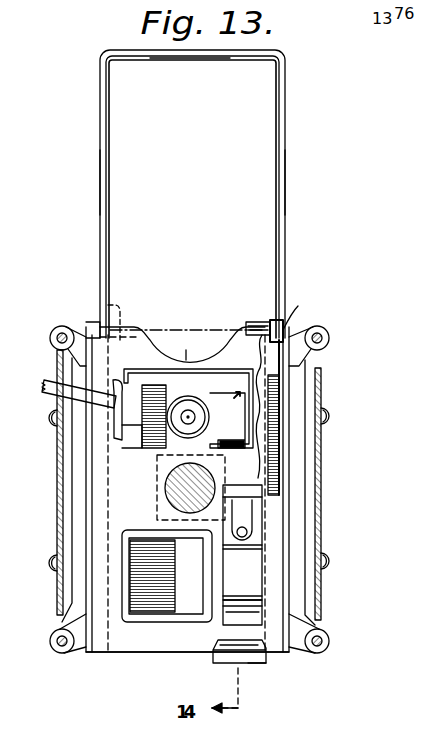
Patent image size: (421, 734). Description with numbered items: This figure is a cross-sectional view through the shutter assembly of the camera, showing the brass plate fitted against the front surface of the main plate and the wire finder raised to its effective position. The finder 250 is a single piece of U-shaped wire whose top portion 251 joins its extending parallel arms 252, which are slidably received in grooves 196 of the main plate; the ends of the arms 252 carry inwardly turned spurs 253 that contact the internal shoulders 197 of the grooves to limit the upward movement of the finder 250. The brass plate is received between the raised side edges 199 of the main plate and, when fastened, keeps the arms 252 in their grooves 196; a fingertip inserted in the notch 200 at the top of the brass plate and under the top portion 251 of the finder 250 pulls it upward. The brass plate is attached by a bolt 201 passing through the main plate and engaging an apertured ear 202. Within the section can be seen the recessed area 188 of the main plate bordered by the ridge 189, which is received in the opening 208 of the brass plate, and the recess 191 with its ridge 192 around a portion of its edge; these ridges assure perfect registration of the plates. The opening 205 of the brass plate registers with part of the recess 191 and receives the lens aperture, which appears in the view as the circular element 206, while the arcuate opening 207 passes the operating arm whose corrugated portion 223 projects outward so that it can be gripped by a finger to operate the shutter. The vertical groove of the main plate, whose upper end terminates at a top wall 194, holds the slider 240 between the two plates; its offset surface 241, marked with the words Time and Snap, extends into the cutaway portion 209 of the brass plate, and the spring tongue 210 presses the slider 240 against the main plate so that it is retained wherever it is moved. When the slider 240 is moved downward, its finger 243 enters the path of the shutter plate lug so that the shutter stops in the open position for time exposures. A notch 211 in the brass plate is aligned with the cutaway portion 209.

The finder 250 is at (298, 150).
The cover top wall 251 is at (188, 59).
The parallel arms 252 is at (100, 180).
The recessed area 188 is at (148, 612).
The ridge 189 is at (182, 620).
The notch 200 is at (150, 345).
The recess 191 is at (190, 348).
The ridge 192 is at (205, 348).
The internal shoulders 197 is at (110, 308).
The spurs 253 is at (48, 349).
The raised side edges 199 is at (285, 404).
The grooves 196 is at (282, 471).
The portion 223 is at (50, 382).
The arcuate opening 207 is at (112, 425).
The opening 205 is at (142, 453).
The bolt 201 is at (198, 394).
The apertured ear 202 is at (166, 421).
The top wall 194 is at (229, 438).
The cam 206 is at (166, 501).
The opening 208 is at (158, 545).
The spring tongue 210 is at (245, 519).
The cutaway portion 209 is at (262, 541).
The offset surface 241 is at (250, 601).
The slider 240 is at (248, 618).
The finger 243 is at (222, 663).
The notch 211 is at (252, 665).